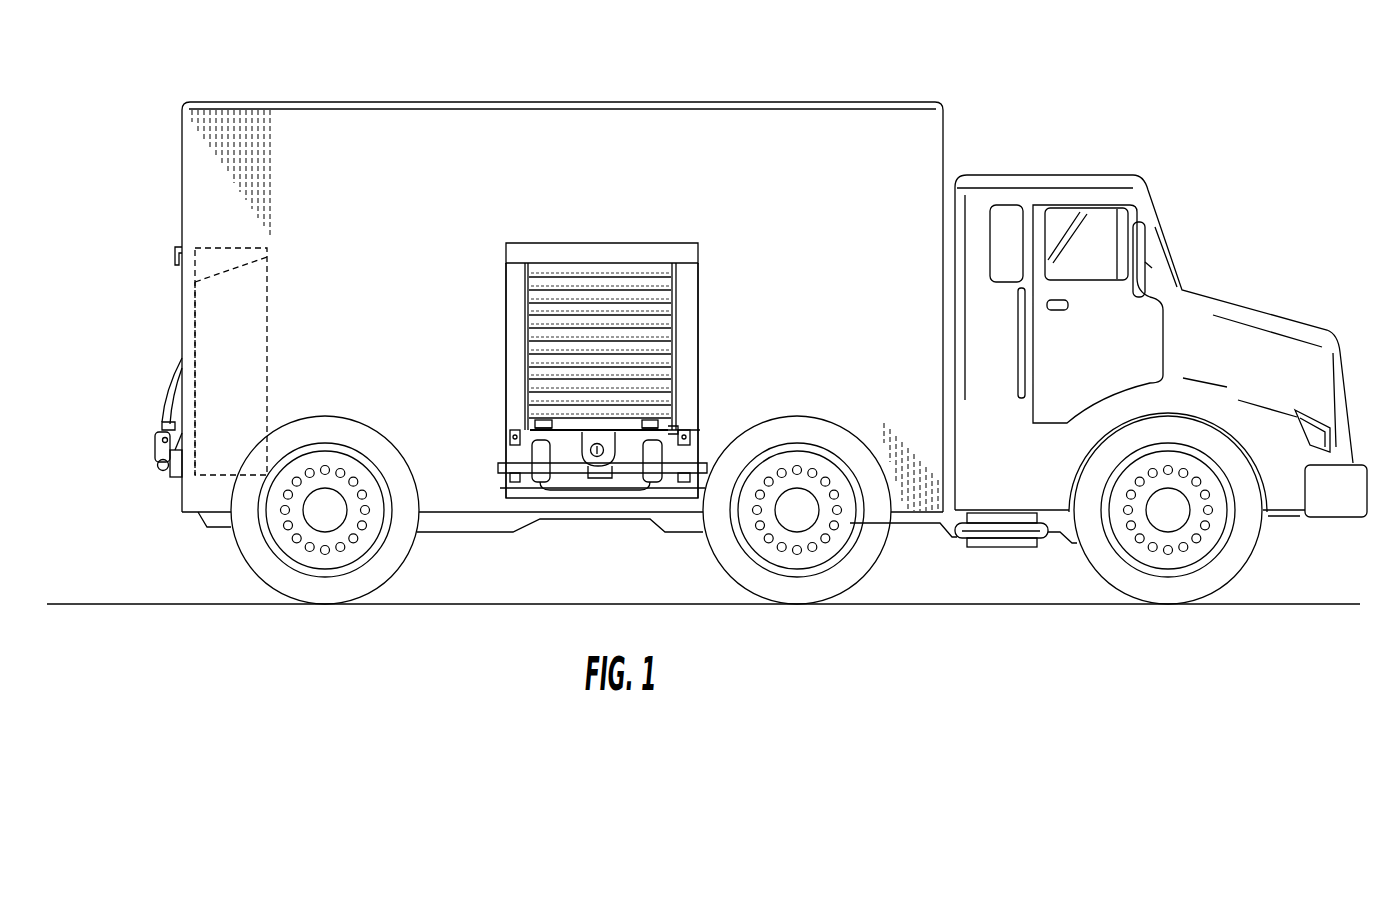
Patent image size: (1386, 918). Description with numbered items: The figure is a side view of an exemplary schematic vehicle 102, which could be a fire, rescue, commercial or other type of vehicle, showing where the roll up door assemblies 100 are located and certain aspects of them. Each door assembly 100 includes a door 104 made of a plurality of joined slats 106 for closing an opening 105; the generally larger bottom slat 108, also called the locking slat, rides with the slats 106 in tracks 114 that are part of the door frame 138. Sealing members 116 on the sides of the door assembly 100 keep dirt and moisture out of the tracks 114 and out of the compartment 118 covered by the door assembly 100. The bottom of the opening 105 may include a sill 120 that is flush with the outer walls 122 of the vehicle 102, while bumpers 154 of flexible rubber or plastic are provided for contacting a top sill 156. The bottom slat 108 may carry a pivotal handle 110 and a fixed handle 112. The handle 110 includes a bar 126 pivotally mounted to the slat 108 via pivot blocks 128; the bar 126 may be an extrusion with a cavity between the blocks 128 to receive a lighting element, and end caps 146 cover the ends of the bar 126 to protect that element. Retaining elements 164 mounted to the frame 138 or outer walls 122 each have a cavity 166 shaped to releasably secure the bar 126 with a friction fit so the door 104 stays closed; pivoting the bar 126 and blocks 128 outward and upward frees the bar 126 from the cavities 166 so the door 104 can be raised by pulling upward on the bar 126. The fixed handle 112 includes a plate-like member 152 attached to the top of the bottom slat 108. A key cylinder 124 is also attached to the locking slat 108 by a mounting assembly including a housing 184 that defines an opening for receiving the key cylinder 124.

The roll up door assembly 100 is at (158, 290).
The vehicle 102 is at (703, 102).
The door 104 is at (182, 330).
The opening 105 is at (195, 347).
The slats 106 is at (665, 373).
The bottom slat 108 is at (667, 430).
The handle 110 is at (718, 452).
The fixed handle 112 is at (677, 417).
The tracks 114 is at (267, 257).
The sealing members 116 is at (527, 297).
The compartment 118 is at (254, 308).
The sill 120 is at (545, 490).
The outer walls 122 is at (868, 324).
The key cylinder 124 is at (588, 458).
The bar 126 is at (627, 477).
The pivot blocks 128 is at (155, 437).
The frame 138 is at (508, 280).
The end caps 146 is at (160, 470).
The plate-like member 152 is at (184, 358).
The bumpers 154 is at (182, 388).
The top sill 156 is at (175, 248).
The retaining elements 164 is at (176, 446).
The cavity 166 is at (182, 458).
The housing 184 is at (625, 467).